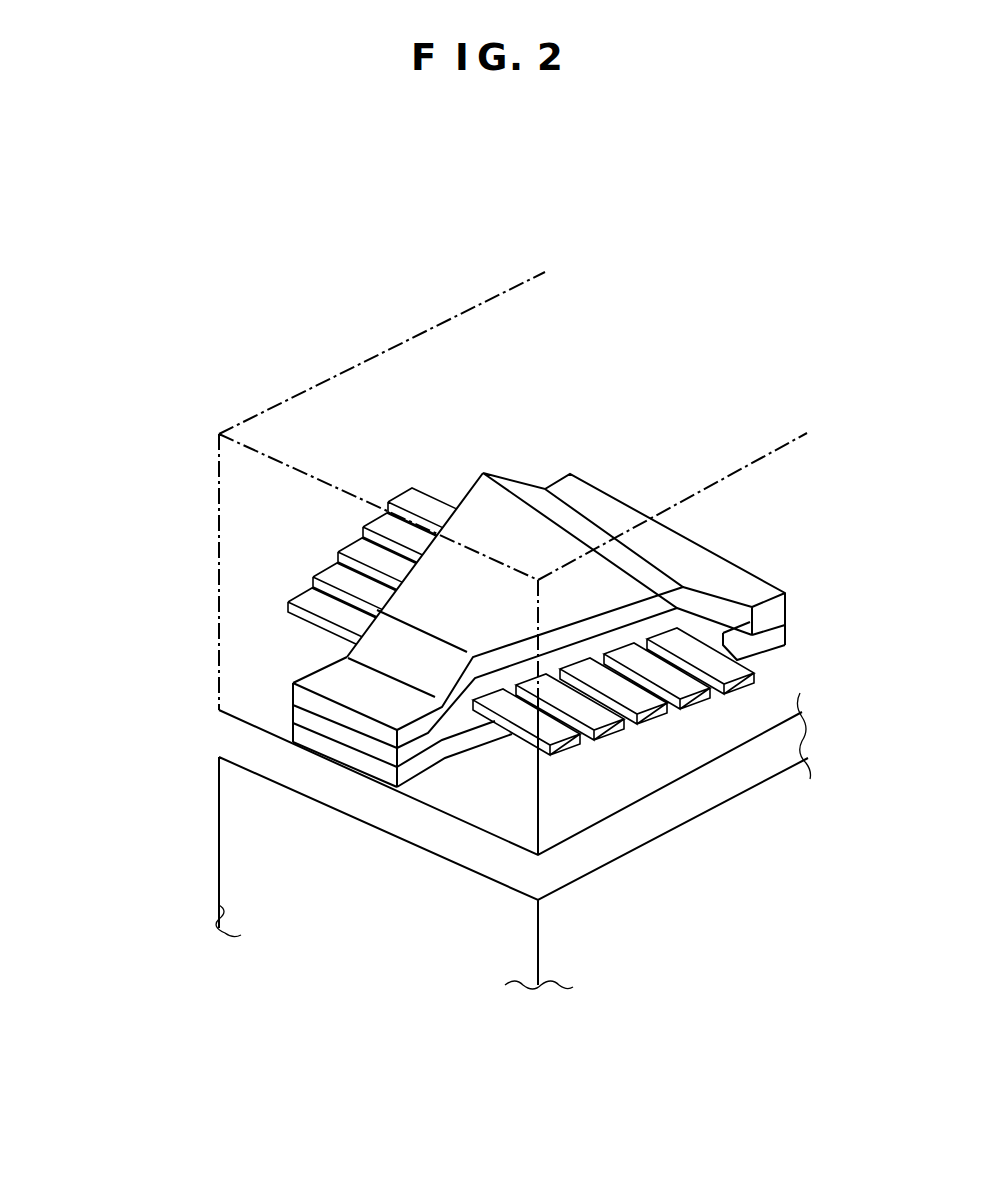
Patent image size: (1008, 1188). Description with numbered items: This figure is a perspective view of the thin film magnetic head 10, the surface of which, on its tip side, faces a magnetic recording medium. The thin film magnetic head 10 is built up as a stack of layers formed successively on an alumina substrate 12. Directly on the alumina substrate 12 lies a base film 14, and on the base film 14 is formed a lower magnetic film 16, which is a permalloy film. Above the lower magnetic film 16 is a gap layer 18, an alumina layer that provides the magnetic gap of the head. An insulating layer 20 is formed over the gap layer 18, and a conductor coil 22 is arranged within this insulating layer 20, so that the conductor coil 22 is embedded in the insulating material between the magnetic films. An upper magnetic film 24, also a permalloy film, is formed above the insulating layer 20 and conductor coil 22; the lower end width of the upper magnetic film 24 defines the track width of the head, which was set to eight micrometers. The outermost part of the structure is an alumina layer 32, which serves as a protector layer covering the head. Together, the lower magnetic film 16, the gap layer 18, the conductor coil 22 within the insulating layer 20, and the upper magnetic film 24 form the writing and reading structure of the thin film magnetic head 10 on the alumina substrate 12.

The thin film magnetic head 10 is at (216, 551).
The alumina substrate 12 is at (245, 875).
The base film 14 is at (232, 740).
The lower magnetic film 16 is at (373, 766).
The gap layer 18 is at (343, 733).
The insulating layer 20 is at (700, 620).
The conductor coil 22 is at (423, 500).
The upper magnetic film 24 is at (303, 702).
The alumina layer 32 is at (357, 392).